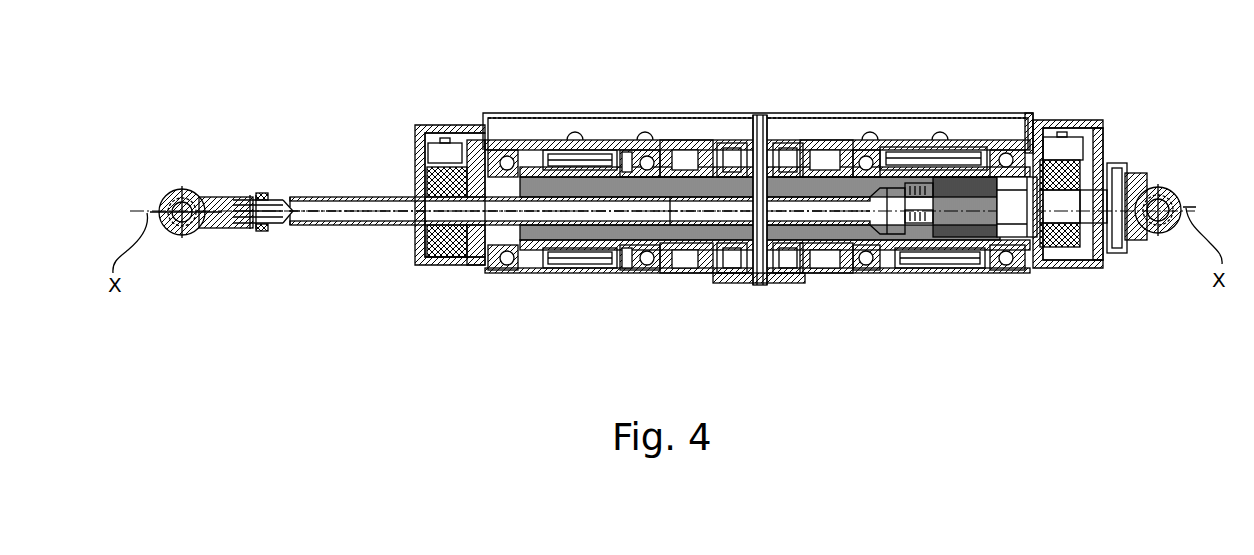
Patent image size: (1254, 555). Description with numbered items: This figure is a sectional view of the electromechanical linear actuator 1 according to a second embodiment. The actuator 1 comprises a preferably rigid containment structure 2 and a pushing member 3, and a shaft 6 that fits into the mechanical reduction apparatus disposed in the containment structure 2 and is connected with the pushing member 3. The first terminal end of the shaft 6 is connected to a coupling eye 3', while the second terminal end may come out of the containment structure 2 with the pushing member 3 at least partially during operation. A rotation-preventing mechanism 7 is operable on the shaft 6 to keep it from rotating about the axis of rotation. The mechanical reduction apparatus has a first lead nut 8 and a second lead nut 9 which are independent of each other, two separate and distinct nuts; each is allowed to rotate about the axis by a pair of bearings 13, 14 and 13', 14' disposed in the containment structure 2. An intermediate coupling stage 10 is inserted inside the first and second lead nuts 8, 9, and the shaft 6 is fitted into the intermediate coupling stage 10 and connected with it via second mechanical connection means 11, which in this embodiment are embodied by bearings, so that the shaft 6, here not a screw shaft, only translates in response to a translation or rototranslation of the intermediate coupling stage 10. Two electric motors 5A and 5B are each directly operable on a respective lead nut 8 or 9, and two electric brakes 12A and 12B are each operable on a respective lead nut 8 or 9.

The actuator 1 is at (1130, 74).
The containment structure 2 is at (523, 117).
The pushing member 3 is at (221, 171).
The coupling eye 3' is at (1165, 169).
The electric motor 5A is at (937, 273).
The electric motor 5B is at (578, 272).
The shaft 6 is at (318, 195).
The rotation-preventing mechanism 7 is at (414, 150).
The first lead nut 8 is at (973, 143).
The second lead nut 9 is at (543, 147).
The intermediate coupling stage 10 is at (890, 143).
The second mechanical connection means 11 is at (633, 147).
The electric brake 12A is at (833, 150).
The electric brake 12B is at (680, 147).
The bearing 13 is at (1068, 234).
The bearing 13' is at (683, 296).
The bearing 14 is at (883, 296).
The bearing 14' is at (488, 297).